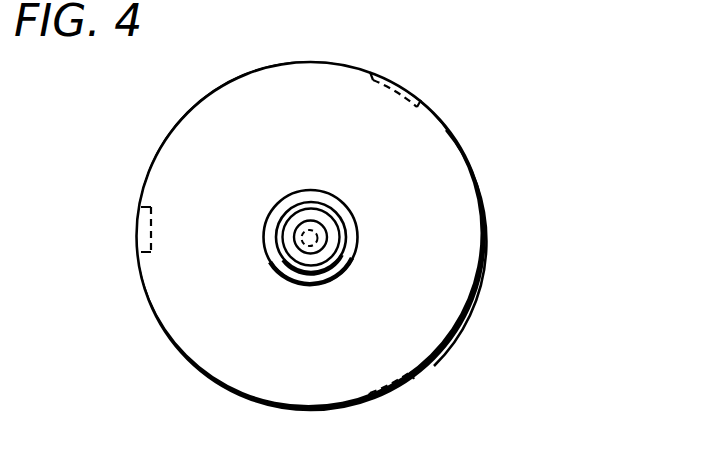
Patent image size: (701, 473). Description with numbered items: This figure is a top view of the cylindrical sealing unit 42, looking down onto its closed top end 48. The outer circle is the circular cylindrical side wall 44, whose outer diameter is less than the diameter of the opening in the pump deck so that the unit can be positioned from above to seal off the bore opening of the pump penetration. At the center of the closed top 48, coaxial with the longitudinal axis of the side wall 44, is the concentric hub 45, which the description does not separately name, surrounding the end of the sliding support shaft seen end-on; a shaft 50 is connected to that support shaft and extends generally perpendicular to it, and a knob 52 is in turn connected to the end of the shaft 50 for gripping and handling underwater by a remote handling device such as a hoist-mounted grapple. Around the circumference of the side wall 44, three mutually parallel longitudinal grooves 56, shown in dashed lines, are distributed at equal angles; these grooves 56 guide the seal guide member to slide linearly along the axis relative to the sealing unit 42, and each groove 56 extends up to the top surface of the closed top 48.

The sealing unit 42 is at (458, 144).
The circular cylindrical side wall 44 is at (486, 236).
The hub 45 is at (284, 202).
The closed top end 48 is at (326, 142).
The shaft 50 is at (307, 250).
The knob 52 is at (302, 232).
The longitudinal grooves 56 is at (137, 230).